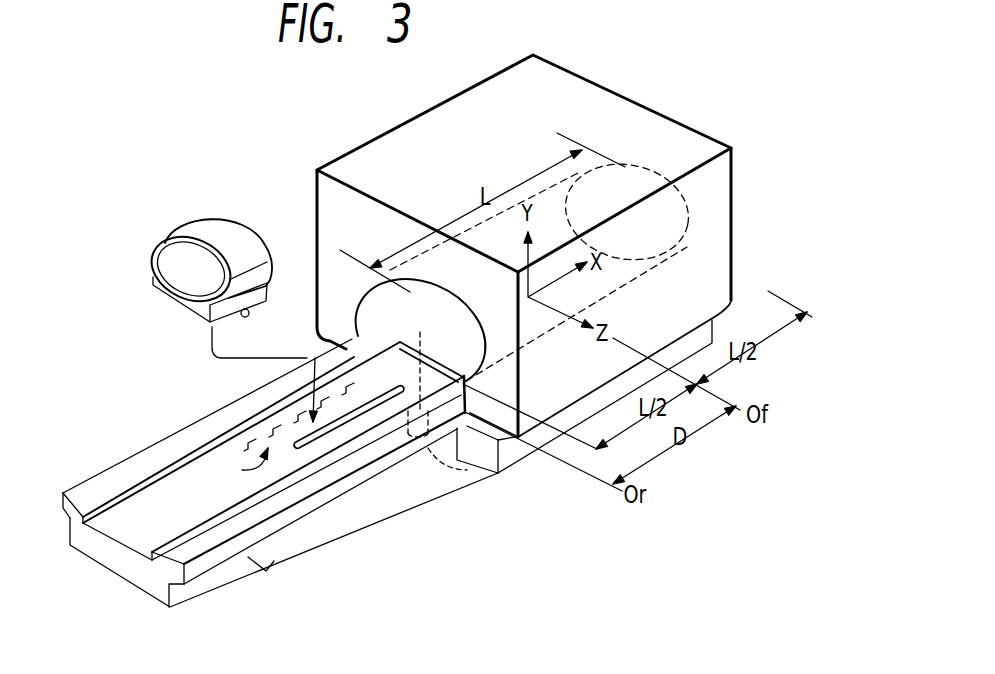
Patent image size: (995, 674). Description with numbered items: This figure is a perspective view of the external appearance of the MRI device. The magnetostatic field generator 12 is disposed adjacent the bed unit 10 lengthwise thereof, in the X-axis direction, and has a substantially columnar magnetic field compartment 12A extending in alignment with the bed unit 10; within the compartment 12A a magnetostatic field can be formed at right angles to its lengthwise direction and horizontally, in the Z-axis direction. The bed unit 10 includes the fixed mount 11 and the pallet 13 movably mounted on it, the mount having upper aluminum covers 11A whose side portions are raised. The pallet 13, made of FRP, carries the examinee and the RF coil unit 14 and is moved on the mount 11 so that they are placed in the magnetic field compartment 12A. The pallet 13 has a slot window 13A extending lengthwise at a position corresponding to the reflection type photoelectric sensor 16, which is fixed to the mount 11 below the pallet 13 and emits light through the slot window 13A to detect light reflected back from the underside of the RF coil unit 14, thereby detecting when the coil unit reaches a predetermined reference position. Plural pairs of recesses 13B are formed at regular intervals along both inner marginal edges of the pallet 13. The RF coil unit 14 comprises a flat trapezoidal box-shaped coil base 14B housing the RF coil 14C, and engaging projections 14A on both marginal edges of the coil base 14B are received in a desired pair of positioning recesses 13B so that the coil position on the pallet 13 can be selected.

The bed unit 10 is at (316, 538).
The mount 11 is at (417, 478).
The upper covers 11A is at (103, 481).
The magnetostatic field generator 12 is at (686, 122).
The magnetic field compartment 12A is at (447, 324).
The pallet 13 is at (180, 512).
The slot window 13A is at (337, 427).
The positioning recesses 13B is at (278, 429).
The RF coil unit 14 is at (196, 267).
The engaging projections 14A is at (251, 316).
The coil base 14B is at (152, 281).
The RF coil 14C is at (243, 240).
The reflection type photoelectric sensor 16 is at (458, 462).